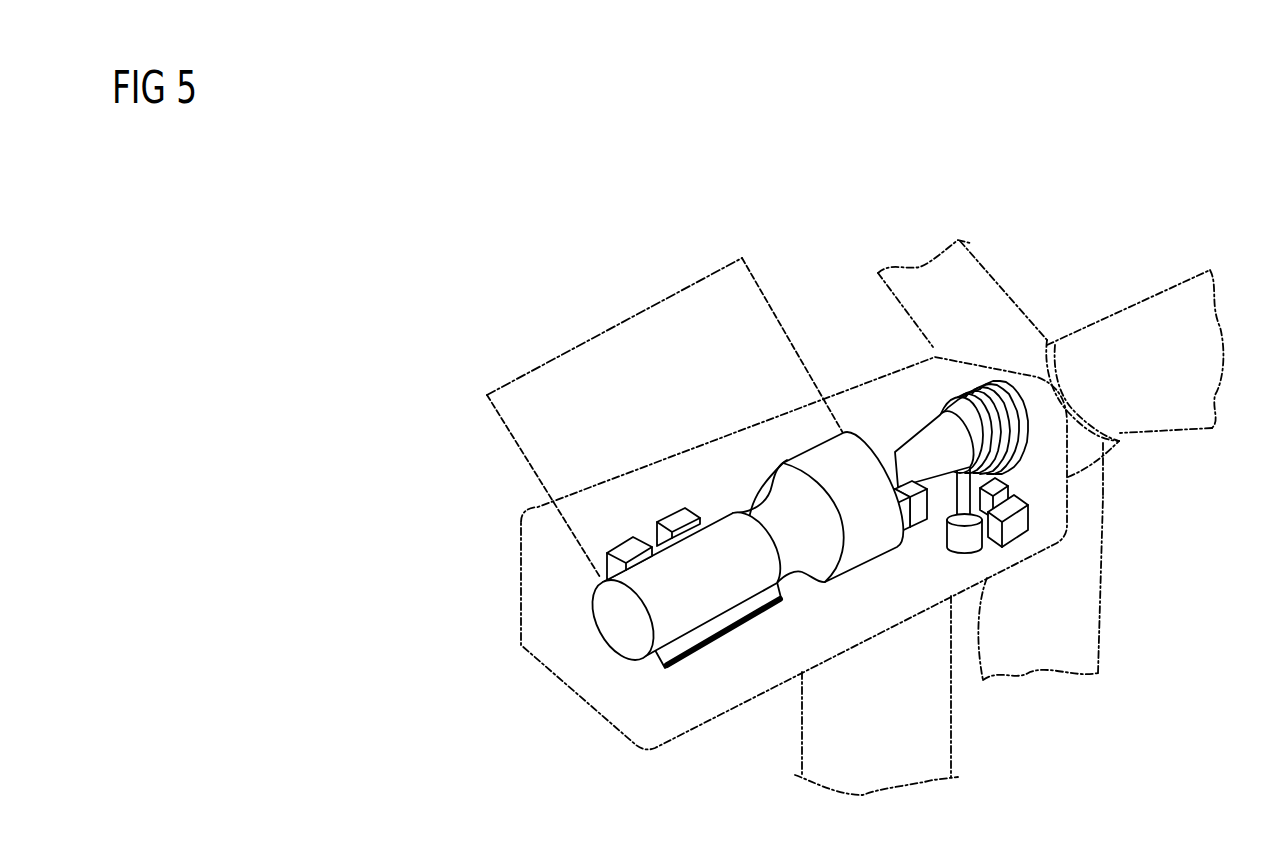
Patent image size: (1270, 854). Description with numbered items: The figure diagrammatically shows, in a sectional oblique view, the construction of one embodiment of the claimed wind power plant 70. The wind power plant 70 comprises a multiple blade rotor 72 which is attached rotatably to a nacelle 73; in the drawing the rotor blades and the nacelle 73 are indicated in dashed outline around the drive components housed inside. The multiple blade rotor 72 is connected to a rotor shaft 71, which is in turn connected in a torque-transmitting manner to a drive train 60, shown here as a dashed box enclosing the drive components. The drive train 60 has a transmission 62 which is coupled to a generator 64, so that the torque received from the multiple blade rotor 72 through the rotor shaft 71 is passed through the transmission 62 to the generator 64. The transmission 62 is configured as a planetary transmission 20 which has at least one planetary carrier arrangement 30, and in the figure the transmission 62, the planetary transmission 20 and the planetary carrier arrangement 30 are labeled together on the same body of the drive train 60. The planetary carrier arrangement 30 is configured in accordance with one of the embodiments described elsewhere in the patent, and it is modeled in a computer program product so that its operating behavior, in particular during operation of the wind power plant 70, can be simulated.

The planetary transmission 20 is at (797, 473).
The planetary carrier arrangement 30 is at (797, 473).
The drive train 60 is at (626, 322).
The transmission 62 is at (812, 462).
The generator 64 is at (622, 633).
The wind power plant 70 is at (555, 208).
The rotor shaft 71 is at (918, 450).
The multiple blade rotor 72 is at (1093, 613).
The nacelle 73 is at (681, 717).